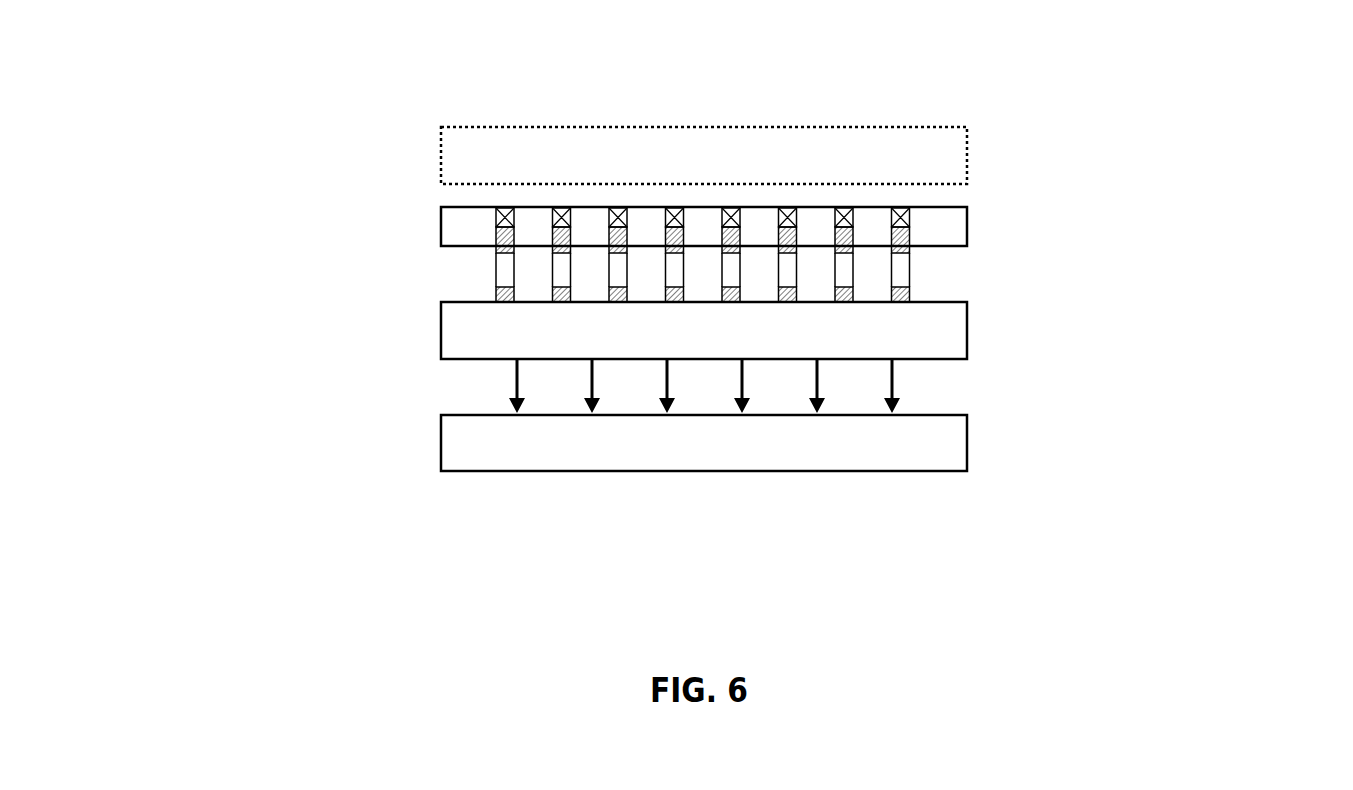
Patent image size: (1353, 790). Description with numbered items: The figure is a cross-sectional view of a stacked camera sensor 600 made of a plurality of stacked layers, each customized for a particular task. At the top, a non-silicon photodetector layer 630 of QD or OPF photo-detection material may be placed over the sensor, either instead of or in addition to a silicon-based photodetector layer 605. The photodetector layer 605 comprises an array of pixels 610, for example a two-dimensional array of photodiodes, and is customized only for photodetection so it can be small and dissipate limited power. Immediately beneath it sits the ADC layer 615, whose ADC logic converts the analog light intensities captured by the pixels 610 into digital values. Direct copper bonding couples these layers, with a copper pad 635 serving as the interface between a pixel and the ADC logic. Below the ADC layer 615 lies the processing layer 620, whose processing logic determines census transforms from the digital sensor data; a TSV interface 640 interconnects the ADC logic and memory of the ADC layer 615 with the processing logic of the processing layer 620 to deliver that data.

The stacked camera sensor 600 is at (723, 91).
The non-silicon photodetector layer 630 is at (967, 157).
The photodetector layer 605 is at (967, 225).
The pixels 610 is at (497, 218).
The copper pad 635 is at (497, 258).
The ADC layer 615 is at (967, 330).
The TSV interface 640 is at (893, 382).
The processing layer 620 is at (441, 443).